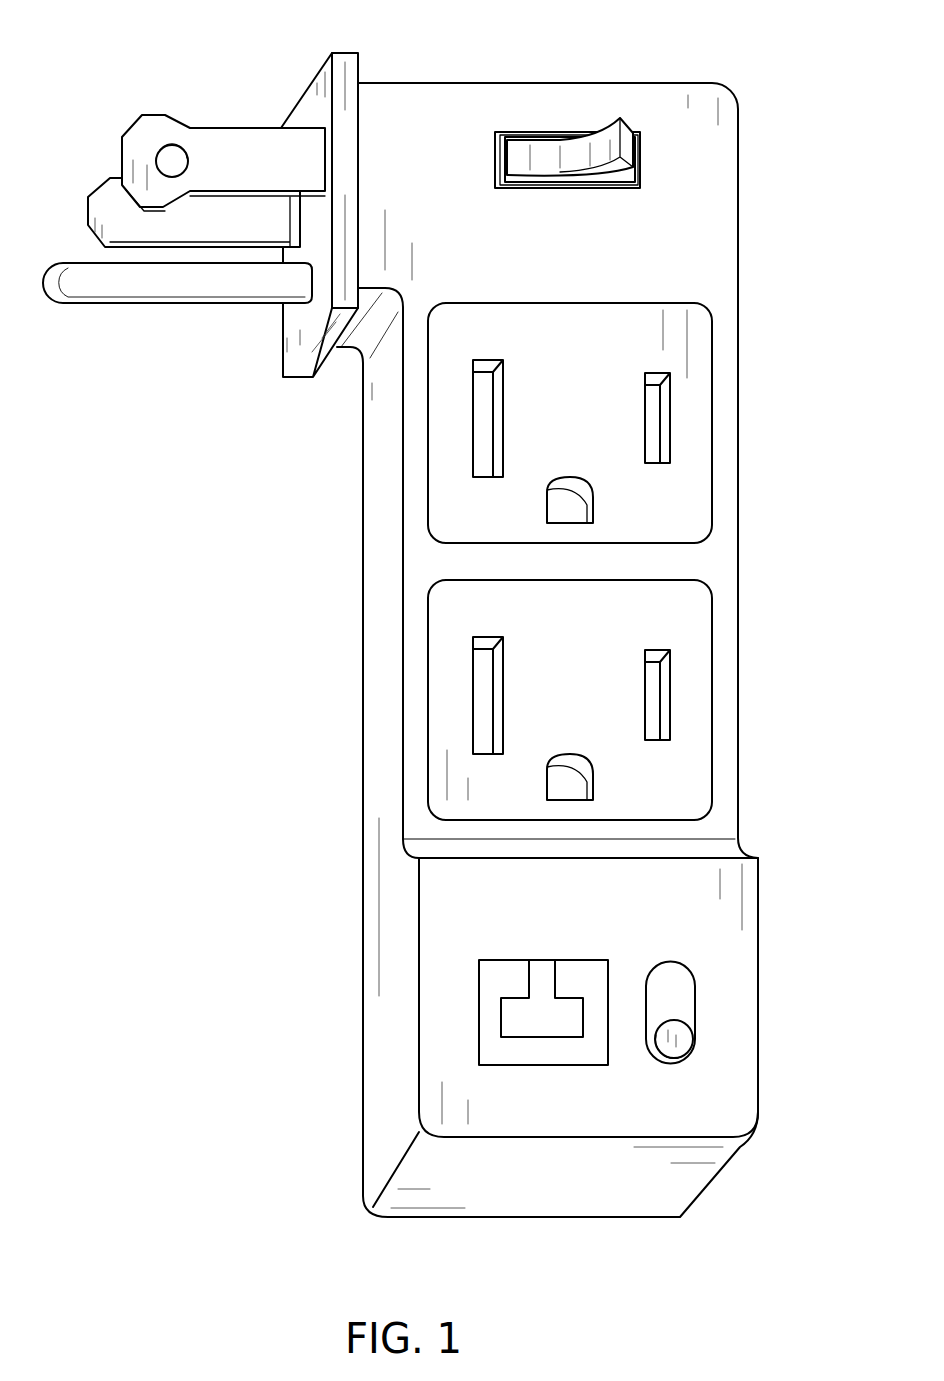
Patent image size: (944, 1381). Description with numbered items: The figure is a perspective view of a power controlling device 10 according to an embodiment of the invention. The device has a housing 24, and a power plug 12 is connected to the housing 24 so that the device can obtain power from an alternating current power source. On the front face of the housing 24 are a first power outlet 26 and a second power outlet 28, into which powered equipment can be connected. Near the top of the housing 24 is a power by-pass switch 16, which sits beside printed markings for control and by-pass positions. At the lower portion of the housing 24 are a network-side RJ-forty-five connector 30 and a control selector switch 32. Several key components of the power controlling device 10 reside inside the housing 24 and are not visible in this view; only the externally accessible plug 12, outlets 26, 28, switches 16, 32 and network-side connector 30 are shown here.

The power controlling device 10 is at (790, 116).
The power plug 12 is at (260, 185).
The power by-pass switch 16 is at (545, 157).
The housing 24 is at (588, 256).
The first power outlet 26 is at (658, 532).
The second power outlet 28 is at (657, 810).
The network-side RJ-45 connector 30 is at (530, 1010).
The control selector switch 32 is at (673, 992).